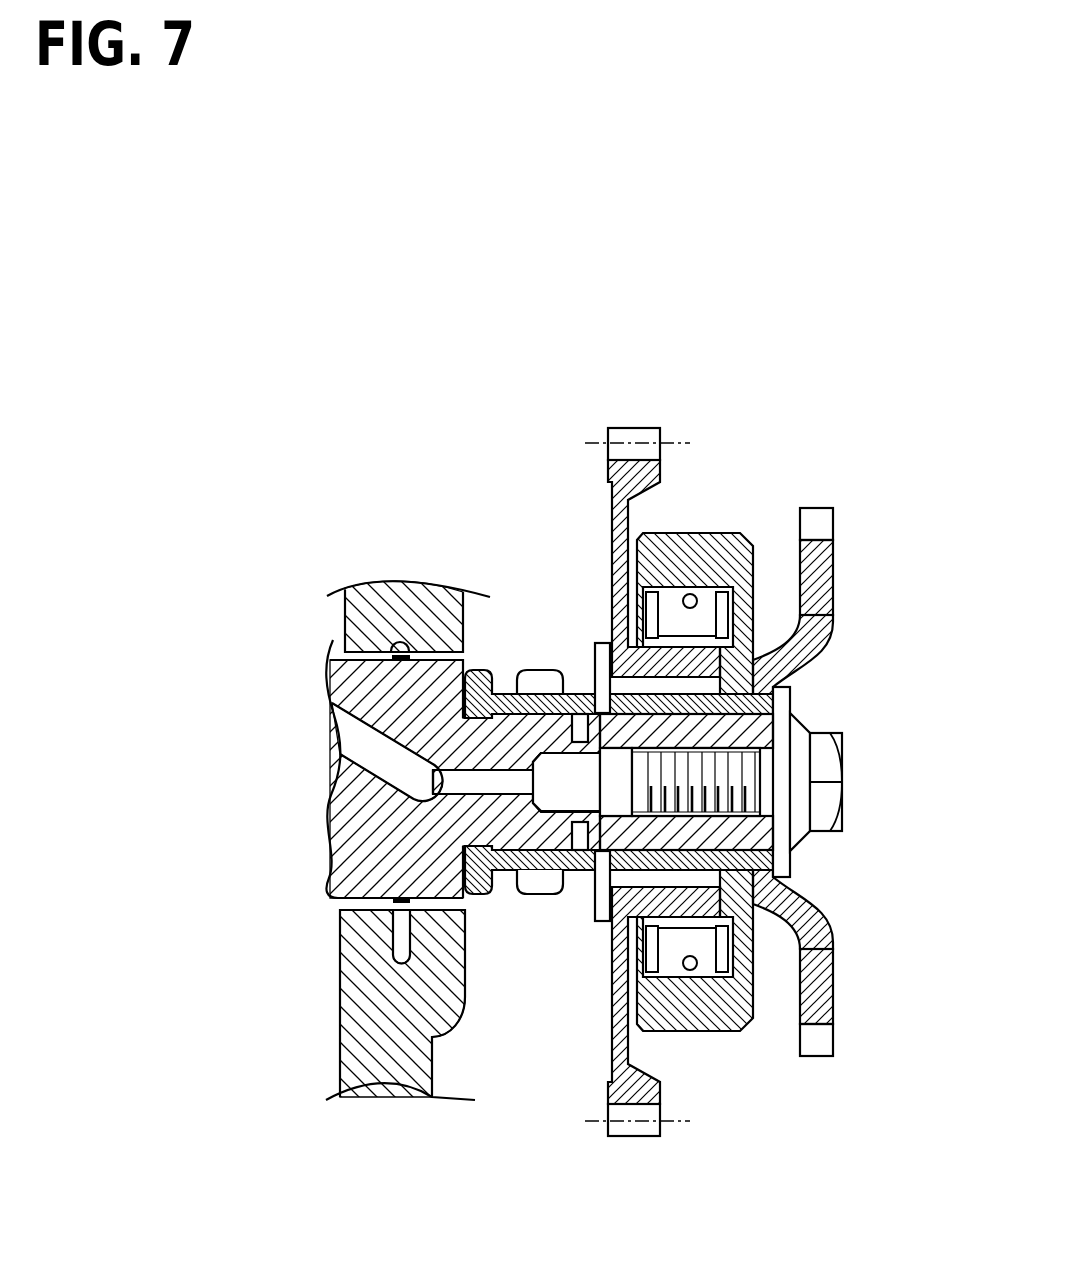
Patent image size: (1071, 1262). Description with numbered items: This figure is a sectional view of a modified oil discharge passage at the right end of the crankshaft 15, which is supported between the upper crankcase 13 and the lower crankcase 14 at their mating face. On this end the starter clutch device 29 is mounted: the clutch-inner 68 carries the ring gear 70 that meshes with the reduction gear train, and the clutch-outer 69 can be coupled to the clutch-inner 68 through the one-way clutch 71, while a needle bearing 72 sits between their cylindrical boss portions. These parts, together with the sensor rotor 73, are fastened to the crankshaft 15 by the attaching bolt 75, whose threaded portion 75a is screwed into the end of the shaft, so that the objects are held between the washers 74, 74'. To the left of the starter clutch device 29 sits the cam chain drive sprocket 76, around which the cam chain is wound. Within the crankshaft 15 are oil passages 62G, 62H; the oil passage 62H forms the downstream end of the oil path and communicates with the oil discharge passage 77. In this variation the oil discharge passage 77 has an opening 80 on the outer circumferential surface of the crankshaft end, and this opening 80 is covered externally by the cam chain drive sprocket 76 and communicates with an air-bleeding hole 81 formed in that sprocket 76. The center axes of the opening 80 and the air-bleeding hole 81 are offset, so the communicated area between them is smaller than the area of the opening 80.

The upper crankcase 13 is at (345, 622).
The lower crankcase 14 is at (337, 1040).
The crankshaft 15 is at (333, 865).
The starter clutch device 29 is at (768, 332).
The oblique groove 62G is at (347, 733).
The oil passage 62H is at (482, 790).
The clutch-inner 68 is at (613, 502).
The clutch-outer 69 is at (757, 550).
The ring gear 70 is at (638, 430).
The one-way clutch 71 is at (703, 597).
The needle bearing 72 is at (740, 653).
The sensor rotor 73 is at (835, 568).
The washer 74 is at (835, 768).
The washer 74' is at (579, 714).
The attaching bolt 75 is at (830, 758).
The threaded portion 75a is at (760, 787).
The cam chain drive sprocket 76 is at (535, 895).
The oil discharge passage 77 is at (581, 855).
The opening 80 is at (517, 700).
The air-bleeding hole 81 is at (567, 693).